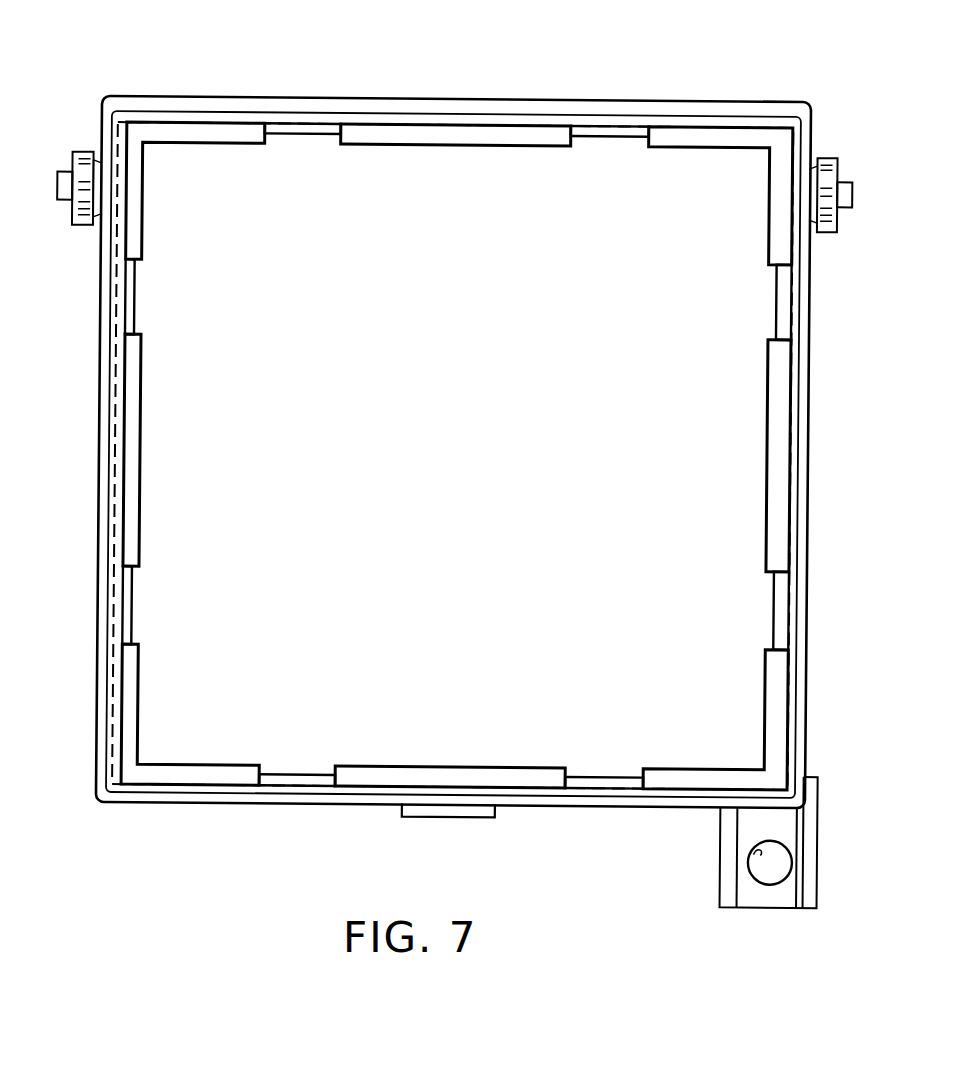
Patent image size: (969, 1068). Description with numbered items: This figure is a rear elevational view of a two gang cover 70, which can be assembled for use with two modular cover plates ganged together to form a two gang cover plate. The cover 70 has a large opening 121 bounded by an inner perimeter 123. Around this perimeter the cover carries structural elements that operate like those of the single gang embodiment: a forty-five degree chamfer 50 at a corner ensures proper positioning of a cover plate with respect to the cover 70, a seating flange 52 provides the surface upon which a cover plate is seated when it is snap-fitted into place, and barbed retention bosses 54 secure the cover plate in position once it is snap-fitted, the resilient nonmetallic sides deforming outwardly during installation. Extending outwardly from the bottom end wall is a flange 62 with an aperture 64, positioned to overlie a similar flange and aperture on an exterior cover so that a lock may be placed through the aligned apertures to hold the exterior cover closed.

The two gang cover 70 is at (631, 77).
The 45° chamfer 50 is at (132, 138).
The seating flange 52 is at (217, 143).
The barbed retention bosses 54 is at (303, 135).
The flange 62 is at (817, 860).
The aperture 64 is at (757, 851).
The inner perimeter 123 is at (328, 354).
The opening 121 is at (470, 496).